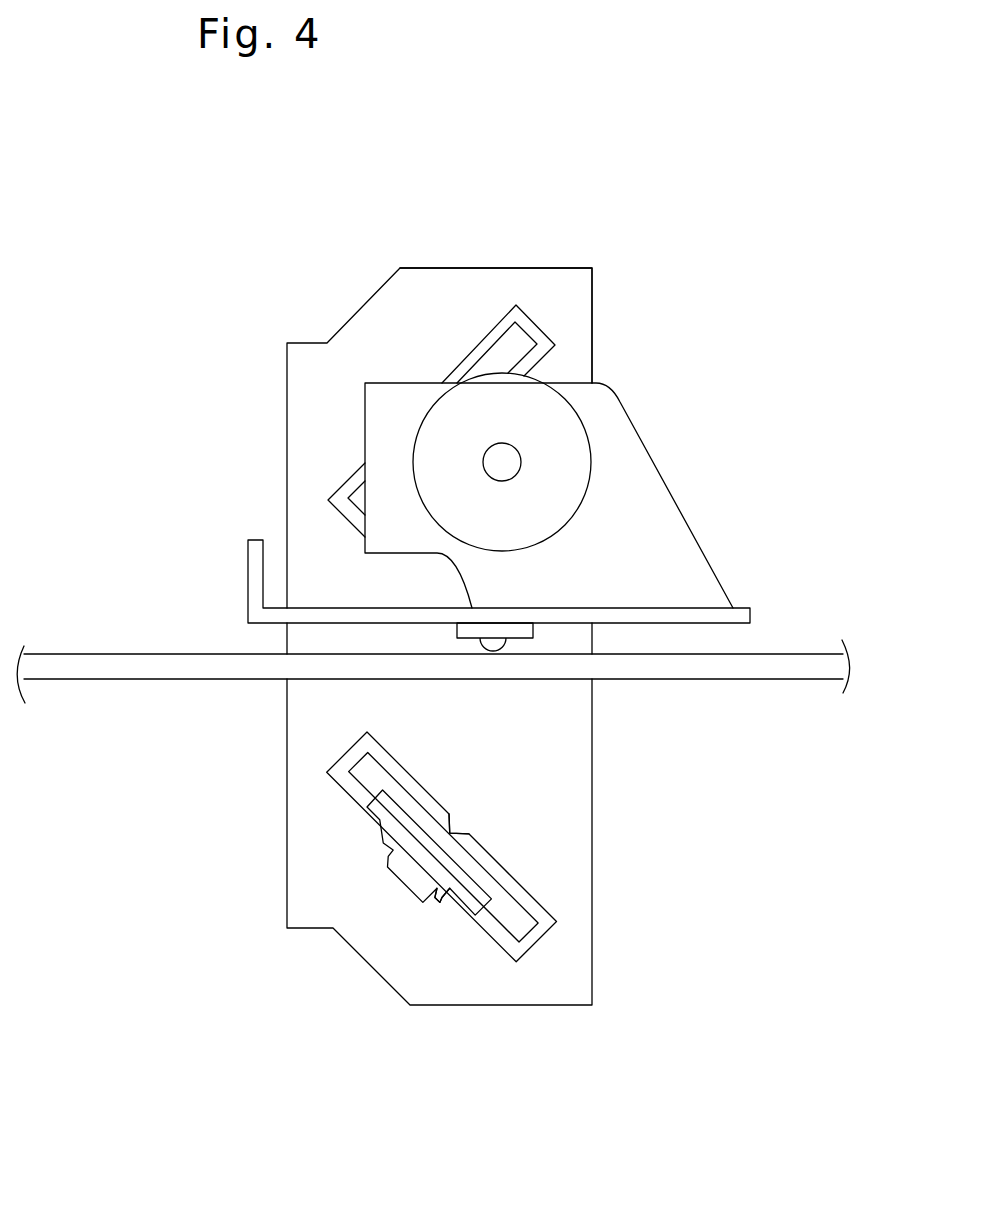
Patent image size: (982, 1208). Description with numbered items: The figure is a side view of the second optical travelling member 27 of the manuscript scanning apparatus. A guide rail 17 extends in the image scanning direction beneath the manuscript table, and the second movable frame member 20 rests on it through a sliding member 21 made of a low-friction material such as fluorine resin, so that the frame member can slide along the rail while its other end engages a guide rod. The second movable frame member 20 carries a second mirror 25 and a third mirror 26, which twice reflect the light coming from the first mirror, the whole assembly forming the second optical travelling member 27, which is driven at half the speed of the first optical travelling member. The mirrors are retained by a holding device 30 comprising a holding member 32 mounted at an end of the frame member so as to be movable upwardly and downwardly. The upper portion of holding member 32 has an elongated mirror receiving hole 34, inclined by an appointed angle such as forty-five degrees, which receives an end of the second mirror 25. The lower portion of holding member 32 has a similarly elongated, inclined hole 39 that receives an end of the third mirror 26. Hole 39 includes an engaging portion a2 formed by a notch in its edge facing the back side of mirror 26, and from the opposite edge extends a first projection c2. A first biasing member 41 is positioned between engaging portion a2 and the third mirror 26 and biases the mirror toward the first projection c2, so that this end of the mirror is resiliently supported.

The guide rail 17 is at (87, 681).
The second movable frame member 20 is at (247, 563).
The sliding member 21 is at (481, 641).
The second mirror 25 is at (328, 498).
The third mirror 26 is at (347, 780).
The second optical travelling member 27 is at (662, 381).
The holding device 30 is at (303, 405).
The holding member 32 is at (583, 268).
The mirror receiving hole 34 is at (532, 320).
The hole 39 is at (548, 920).
The first biasing member 41 is at (380, 823).
The engaging portion a2 is at (440, 905).
The first projection c2 is at (480, 842).